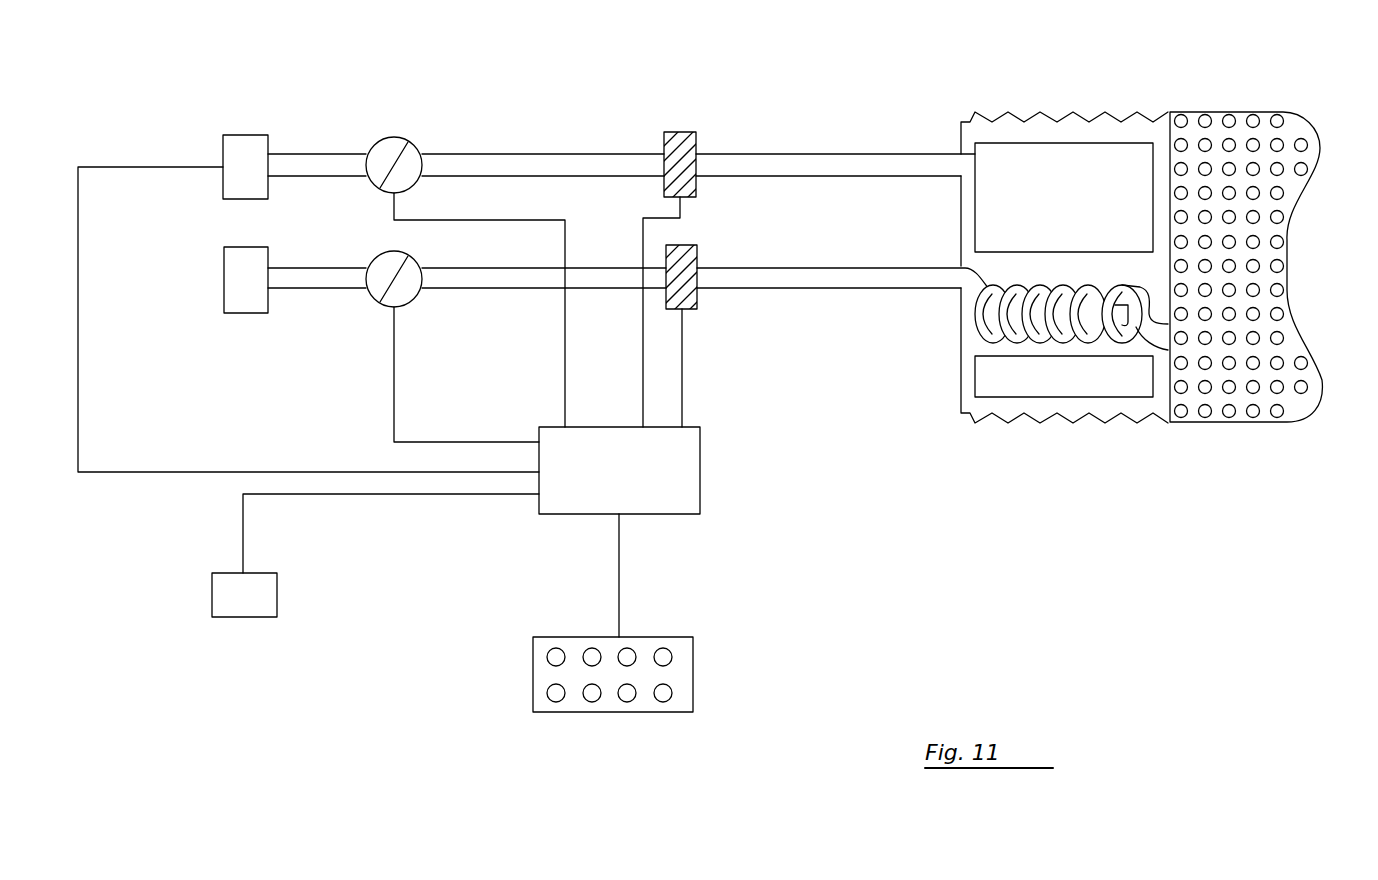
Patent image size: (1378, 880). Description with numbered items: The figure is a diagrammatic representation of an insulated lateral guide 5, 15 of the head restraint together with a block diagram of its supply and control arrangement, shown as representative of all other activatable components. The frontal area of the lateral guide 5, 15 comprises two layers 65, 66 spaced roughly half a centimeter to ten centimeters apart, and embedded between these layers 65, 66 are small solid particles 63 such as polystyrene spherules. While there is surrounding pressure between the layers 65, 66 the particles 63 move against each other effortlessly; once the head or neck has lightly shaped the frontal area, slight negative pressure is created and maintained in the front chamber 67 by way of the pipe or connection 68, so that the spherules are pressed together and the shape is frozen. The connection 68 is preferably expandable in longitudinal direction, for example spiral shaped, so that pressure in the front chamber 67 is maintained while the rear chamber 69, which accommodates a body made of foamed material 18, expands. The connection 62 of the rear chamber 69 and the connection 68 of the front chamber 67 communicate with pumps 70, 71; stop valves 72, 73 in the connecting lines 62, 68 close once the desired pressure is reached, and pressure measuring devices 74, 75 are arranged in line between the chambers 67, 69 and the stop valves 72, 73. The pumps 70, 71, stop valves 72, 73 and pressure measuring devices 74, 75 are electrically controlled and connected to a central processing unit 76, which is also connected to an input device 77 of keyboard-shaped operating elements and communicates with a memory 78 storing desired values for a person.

The lateral guide 5 is at (1169, 285).
The lateral guide 15 is at (1169, 285).
The body made of foamed material 18 is at (1075, 167).
The connection 62 is at (805, 158).
The solid particles 63 is at (1274, 225).
The layer 65 is at (1295, 207).
The layer 66 is at (1170, 277).
The front chamber 67 is at (1240, 377).
The connection 68 is at (872, 280).
The rear chamber 69 is at (1008, 125).
The pump 70 is at (248, 148).
The pump 71 is at (232, 272).
The stop valve 72 is at (393, 145).
The stop valve 73 is at (380, 290).
The pressure measuring device 74 is at (682, 140).
The pressure measuring device 75 is at (686, 253).
The central processing unit 76 is at (688, 473).
The input device 77 is at (682, 670).
The memory 78 is at (225, 598).